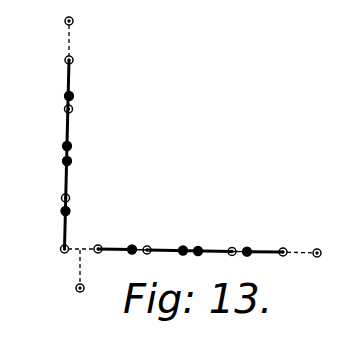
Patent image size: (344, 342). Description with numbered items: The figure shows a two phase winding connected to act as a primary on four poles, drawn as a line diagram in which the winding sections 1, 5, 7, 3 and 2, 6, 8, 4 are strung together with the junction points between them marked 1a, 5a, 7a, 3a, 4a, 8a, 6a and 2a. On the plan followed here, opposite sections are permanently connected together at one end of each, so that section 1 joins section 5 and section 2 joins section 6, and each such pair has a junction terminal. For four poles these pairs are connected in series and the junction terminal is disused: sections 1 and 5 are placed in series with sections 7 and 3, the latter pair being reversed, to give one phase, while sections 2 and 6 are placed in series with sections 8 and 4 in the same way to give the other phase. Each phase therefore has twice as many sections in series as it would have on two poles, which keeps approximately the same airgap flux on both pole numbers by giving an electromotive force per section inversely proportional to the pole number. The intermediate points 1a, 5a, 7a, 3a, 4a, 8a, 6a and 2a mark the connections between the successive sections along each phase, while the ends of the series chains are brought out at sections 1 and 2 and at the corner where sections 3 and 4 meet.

The winding section 1 is at (63, 39).
The intermediate station 1a is at (60, 96).
The winding section 5 is at (63, 110).
The intermediate station 5a is at (59, 148).
The intermediate station 7a is at (59, 162).
The winding section 7 is at (60, 197).
The intermediate station 3a is at (57, 212).
The winding section 3 is at (58, 249).
The winding section 4 is at (98, 243).
The intermediate station 4a is at (130, 244).
The winding section 8 is at (147, 244).
The intermediate station 8a is at (184, 245).
The intermediate station 6a is at (200, 245).
The winding section 6 is at (232, 246).
The intermediate station 2a is at (248, 245).
The winding section 2 is at (283, 246).